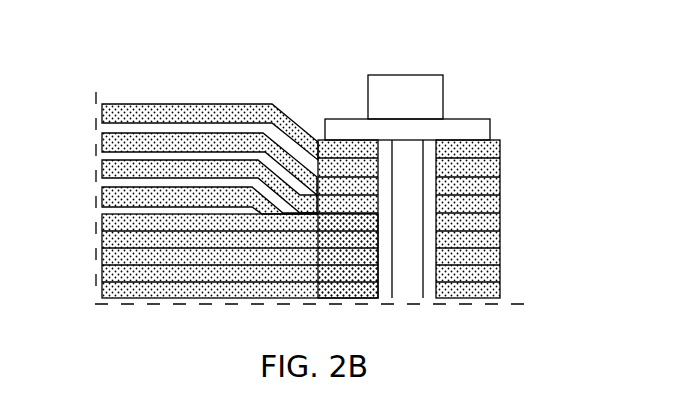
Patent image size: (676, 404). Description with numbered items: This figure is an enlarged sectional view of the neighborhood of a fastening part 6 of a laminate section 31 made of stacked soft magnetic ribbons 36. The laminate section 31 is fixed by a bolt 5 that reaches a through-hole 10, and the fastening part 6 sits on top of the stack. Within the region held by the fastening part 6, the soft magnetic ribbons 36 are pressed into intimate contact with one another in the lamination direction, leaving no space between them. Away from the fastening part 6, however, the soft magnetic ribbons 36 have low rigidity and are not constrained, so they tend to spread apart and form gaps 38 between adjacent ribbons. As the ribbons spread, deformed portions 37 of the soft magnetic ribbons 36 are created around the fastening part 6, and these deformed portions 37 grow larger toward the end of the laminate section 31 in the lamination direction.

The bolt 5 is at (407, 74).
The fastening part 6 is at (465, 118).
The through-hole 10 is at (383, 299).
The laminate section 31 is at (510, 143).
The soft magnetic ribbon 36 is at (212, 115).
The deformed portion 37 is at (290, 118).
The gap 38 is at (100, 128).